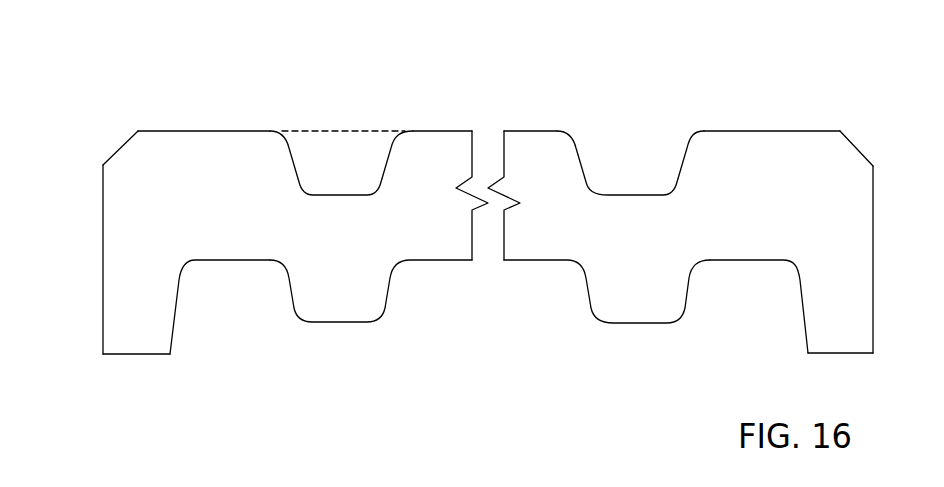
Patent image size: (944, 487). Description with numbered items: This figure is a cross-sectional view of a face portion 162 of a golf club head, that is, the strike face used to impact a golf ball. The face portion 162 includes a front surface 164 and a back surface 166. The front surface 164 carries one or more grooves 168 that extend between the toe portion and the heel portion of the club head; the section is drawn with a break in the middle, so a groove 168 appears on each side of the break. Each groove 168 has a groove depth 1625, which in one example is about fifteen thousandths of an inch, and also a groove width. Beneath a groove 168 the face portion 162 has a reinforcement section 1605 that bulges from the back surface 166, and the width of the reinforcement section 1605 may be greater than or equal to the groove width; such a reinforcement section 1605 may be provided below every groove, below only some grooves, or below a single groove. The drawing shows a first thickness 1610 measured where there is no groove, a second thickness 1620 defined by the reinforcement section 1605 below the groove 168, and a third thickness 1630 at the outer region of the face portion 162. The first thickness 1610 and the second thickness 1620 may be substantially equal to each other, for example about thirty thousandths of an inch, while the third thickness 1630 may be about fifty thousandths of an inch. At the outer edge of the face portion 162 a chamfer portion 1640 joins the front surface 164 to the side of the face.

The face portion 162 is at (130, 58).
The front surface 164 is at (215, 131).
The back surface 166 is at (213, 261).
The groove 168 is at (342, 118).
The chamfer portion 1640 is at (122, 140).
The reinforcement section 1605 is at (336, 338).
The first thickness 1610 is at (235, 131).
The second thickness 1620 is at (344, 195).
The groove depth 1625 is at (344, 131).
The third thickness 1630 is at (153, 131).